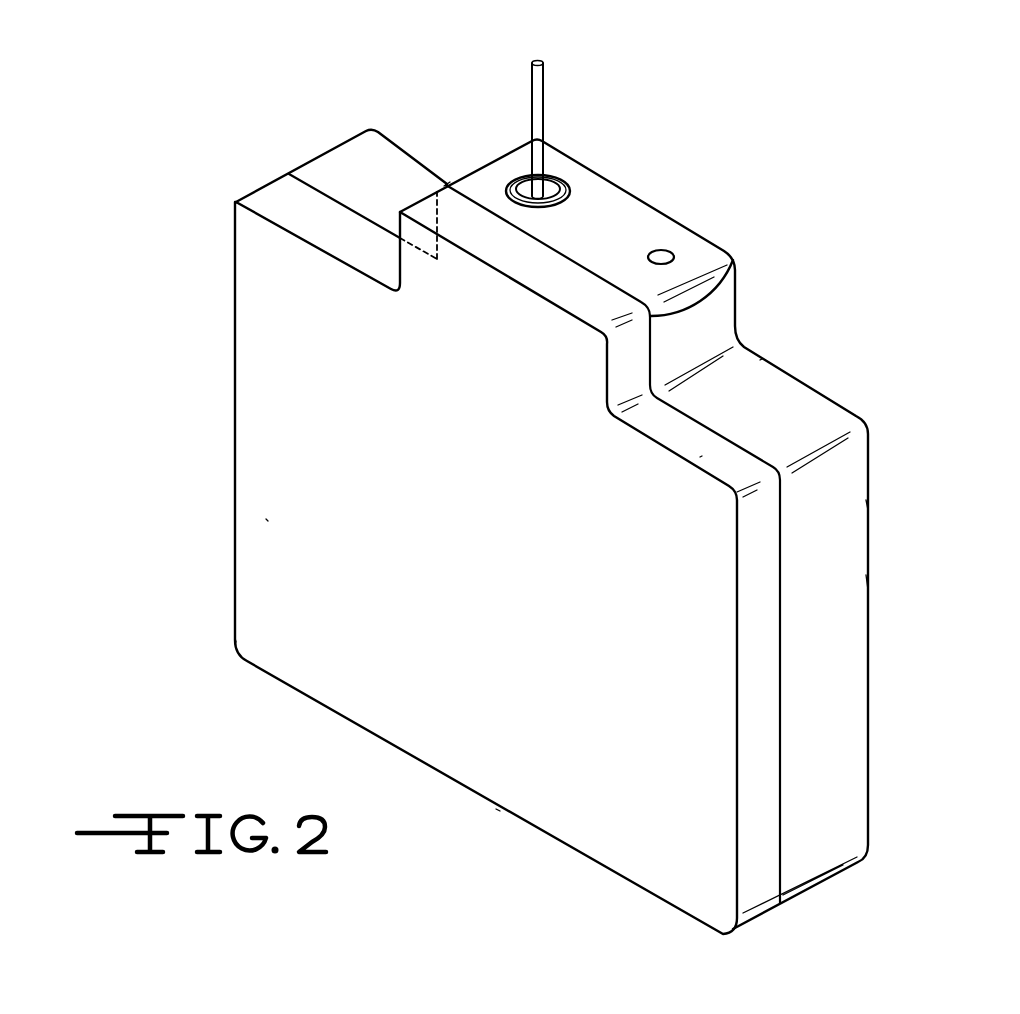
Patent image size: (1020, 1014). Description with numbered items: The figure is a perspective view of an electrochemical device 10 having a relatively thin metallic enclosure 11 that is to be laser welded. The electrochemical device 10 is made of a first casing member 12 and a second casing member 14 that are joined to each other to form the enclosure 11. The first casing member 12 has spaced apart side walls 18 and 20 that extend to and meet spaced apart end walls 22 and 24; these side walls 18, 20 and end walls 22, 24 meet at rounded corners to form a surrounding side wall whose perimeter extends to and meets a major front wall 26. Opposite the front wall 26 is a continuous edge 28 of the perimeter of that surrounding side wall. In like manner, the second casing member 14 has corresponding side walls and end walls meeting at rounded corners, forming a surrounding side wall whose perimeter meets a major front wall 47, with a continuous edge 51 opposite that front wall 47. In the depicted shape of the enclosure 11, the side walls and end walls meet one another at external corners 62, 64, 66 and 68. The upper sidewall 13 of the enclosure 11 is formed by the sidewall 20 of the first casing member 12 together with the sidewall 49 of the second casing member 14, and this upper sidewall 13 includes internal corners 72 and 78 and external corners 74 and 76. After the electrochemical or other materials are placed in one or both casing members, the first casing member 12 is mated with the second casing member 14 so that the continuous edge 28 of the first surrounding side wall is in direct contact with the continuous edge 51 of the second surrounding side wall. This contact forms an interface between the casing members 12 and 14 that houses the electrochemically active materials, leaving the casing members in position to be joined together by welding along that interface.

The electrochemical device 10 is at (842, 262).
The enclosure 11 is at (304, 158).
The first casing member 12 is at (234, 405).
The upper sidewall 13 is at (606, 172).
The second casing member 14 is at (868, 582).
The side wall 18 is at (498, 810).
The side wall 20 is at (705, 454).
The end wall 22 is at (757, 696).
The end wall 24 is at (234, 323).
The major front wall 26 is at (267, 520).
The continuous edge 28 is at (367, 222).
The major front wall 47 is at (868, 505).
The sidewall 49 is at (777, 403).
The continuous edge 51 is at (330, 197).
The external corner 62 is at (820, 443).
The external corner 64 is at (820, 885).
The external corner 66 is at (233, 640).
The external corner 68 is at (234, 203).
The internal corner 72 is at (437, 259).
The external corner 74 is at (447, 184).
The external corner 76 is at (734, 258).
The internal corner 78 is at (652, 395).